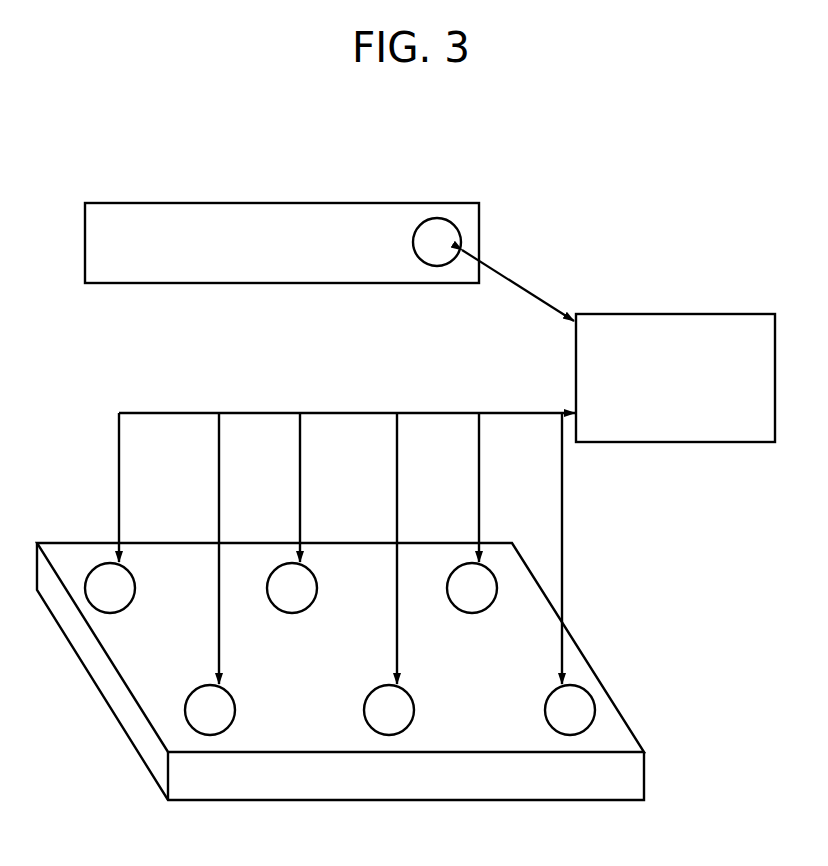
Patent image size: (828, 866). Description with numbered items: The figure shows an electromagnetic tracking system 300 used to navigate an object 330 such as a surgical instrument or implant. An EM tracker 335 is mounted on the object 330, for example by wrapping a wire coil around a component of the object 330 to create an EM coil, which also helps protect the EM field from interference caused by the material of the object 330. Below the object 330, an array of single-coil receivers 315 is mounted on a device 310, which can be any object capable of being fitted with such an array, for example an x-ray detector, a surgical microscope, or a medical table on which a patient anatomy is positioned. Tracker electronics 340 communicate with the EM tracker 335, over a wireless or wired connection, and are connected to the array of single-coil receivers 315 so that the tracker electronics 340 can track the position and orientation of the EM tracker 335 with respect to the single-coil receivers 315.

The electromagnetic tracking system 300 is at (192, 162).
The device 310 is at (150, 773).
The single-coil receivers 315 is at (185, 708).
The object 330 is at (166, 285).
The EM tracker 335 is at (415, 233).
The tracker electronics 340 is at (695, 444).